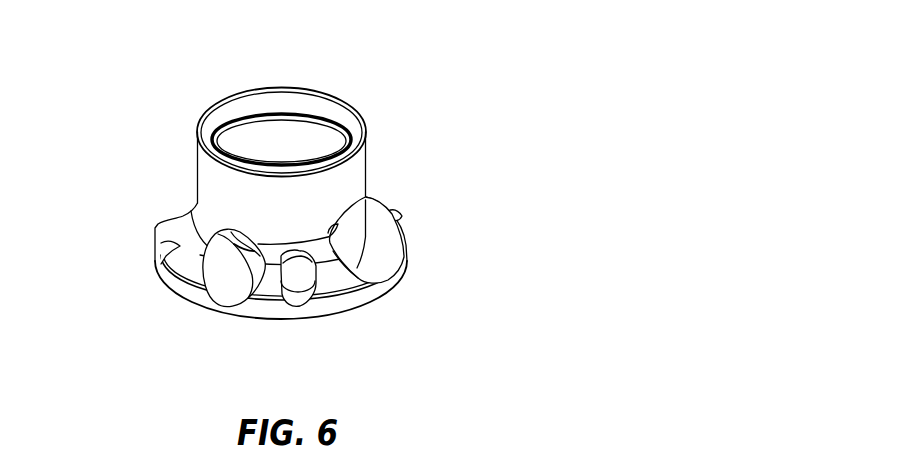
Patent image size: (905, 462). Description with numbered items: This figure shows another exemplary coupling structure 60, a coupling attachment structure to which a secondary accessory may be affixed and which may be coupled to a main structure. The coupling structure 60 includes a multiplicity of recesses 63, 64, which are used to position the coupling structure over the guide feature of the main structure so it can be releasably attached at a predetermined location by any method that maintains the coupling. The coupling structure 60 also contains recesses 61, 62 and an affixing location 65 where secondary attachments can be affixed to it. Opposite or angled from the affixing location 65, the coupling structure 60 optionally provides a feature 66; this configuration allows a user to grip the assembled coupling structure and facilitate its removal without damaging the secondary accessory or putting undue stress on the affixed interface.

The coupling structure 60 is at (468, 107).
The recess 61 is at (153, 260).
The recess 62 is at (403, 278).
The recess 63 is at (215, 125).
The recess 64 is at (318, 120).
The affixing location 65 is at (248, 323).
The feature 66 is at (413, 233).